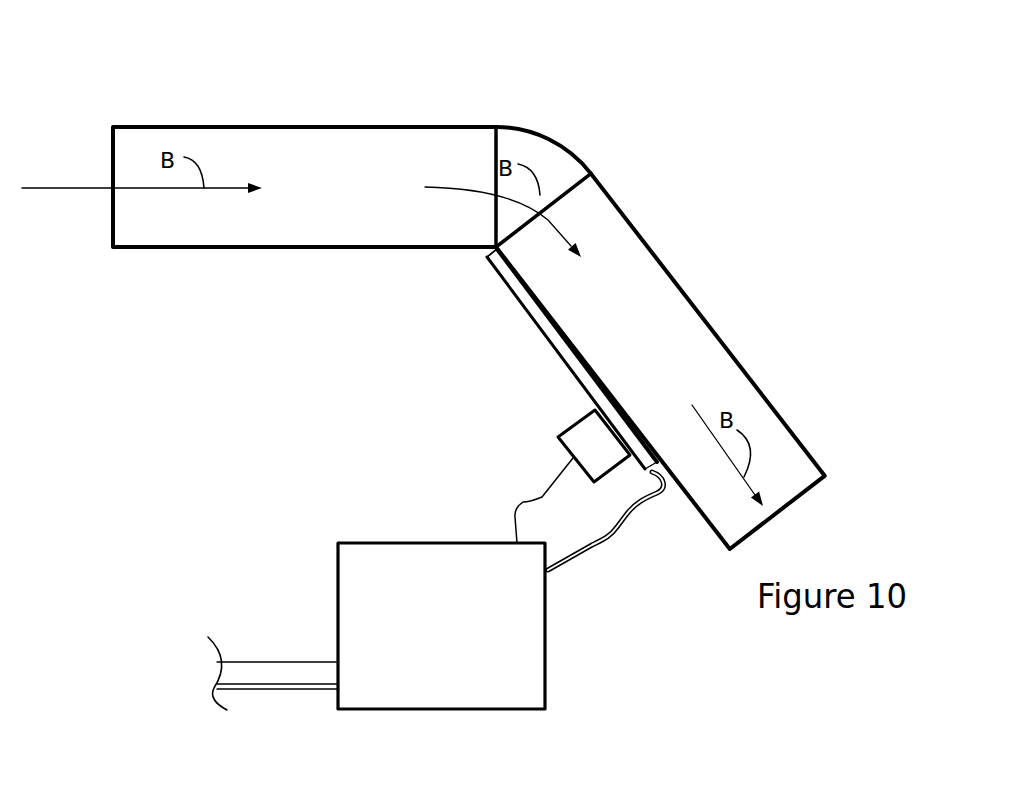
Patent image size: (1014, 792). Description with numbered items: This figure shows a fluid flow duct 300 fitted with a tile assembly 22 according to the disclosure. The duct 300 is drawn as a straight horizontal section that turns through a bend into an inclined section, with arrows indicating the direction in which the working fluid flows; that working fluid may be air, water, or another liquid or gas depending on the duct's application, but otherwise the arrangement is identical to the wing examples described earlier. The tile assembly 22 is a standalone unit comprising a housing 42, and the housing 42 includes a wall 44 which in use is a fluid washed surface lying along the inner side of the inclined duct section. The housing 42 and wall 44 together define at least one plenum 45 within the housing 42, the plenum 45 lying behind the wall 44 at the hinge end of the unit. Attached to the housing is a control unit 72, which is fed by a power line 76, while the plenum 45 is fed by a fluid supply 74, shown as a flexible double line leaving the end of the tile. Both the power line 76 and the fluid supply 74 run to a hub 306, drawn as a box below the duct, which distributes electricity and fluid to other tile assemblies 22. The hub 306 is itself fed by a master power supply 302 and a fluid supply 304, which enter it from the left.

The fluid flow duct 300 is at (92, 66).
The tile assembly 22 is at (482, 333).
The housing 42 is at (553, 346).
The wall 44 is at (611, 383).
The plenum 45 is at (505, 273).
The control unit 72 is at (603, 455).
The fluid supply 74 is at (620, 537).
The power line 76 is at (523, 497).
The hub 306 is at (337, 608).
The master power supply 302 is at (245, 660).
The fluid supply 304 is at (283, 682).